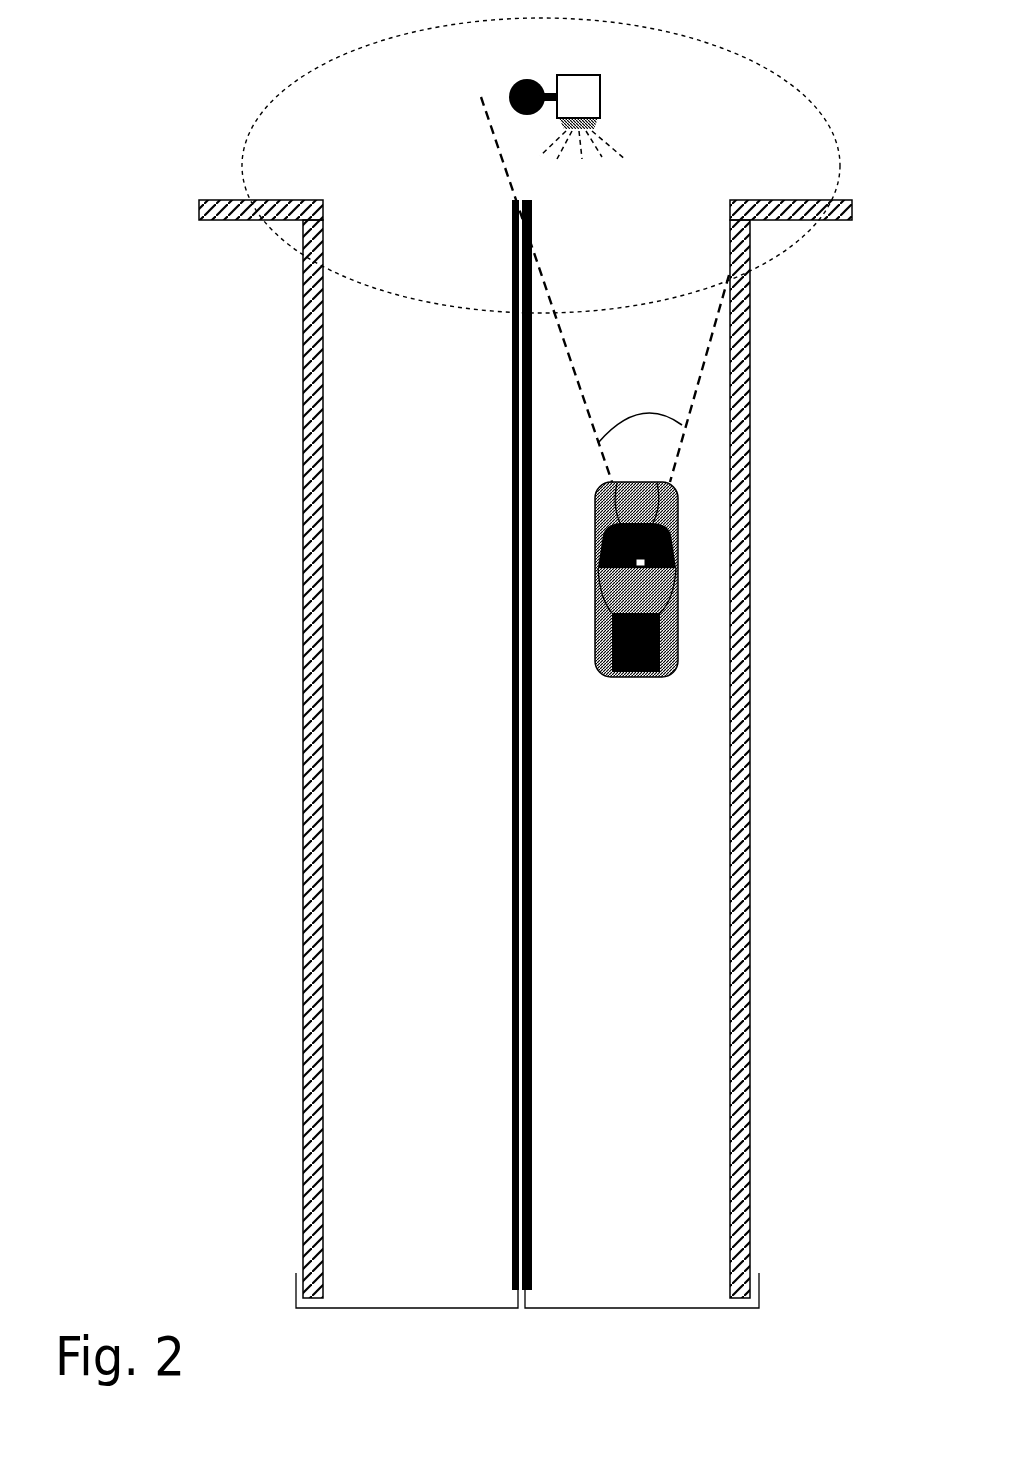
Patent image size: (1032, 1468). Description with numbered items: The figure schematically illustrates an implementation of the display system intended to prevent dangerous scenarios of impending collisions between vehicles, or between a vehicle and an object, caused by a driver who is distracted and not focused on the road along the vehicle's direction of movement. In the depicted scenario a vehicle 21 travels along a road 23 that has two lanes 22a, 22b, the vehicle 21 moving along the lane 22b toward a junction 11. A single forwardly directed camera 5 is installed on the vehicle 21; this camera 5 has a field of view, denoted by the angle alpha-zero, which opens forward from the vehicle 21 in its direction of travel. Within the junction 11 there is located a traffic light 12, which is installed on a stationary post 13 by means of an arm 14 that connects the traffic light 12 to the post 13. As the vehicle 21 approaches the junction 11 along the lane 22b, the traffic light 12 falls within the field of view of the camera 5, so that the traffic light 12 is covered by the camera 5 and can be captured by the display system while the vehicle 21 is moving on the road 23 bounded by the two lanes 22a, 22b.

The forwardly directed camera 5 is at (680, 558).
The junction 11 is at (243, 152).
The traffic light 12 is at (600, 93).
The stationary post 13 is at (513, 95).
The arm 14 is at (549, 93).
The vehicle 21 is at (680, 513).
The lane 22a is at (407, 1314).
The lane 22b is at (642, 1314).
The road 23 is at (303, 1022).